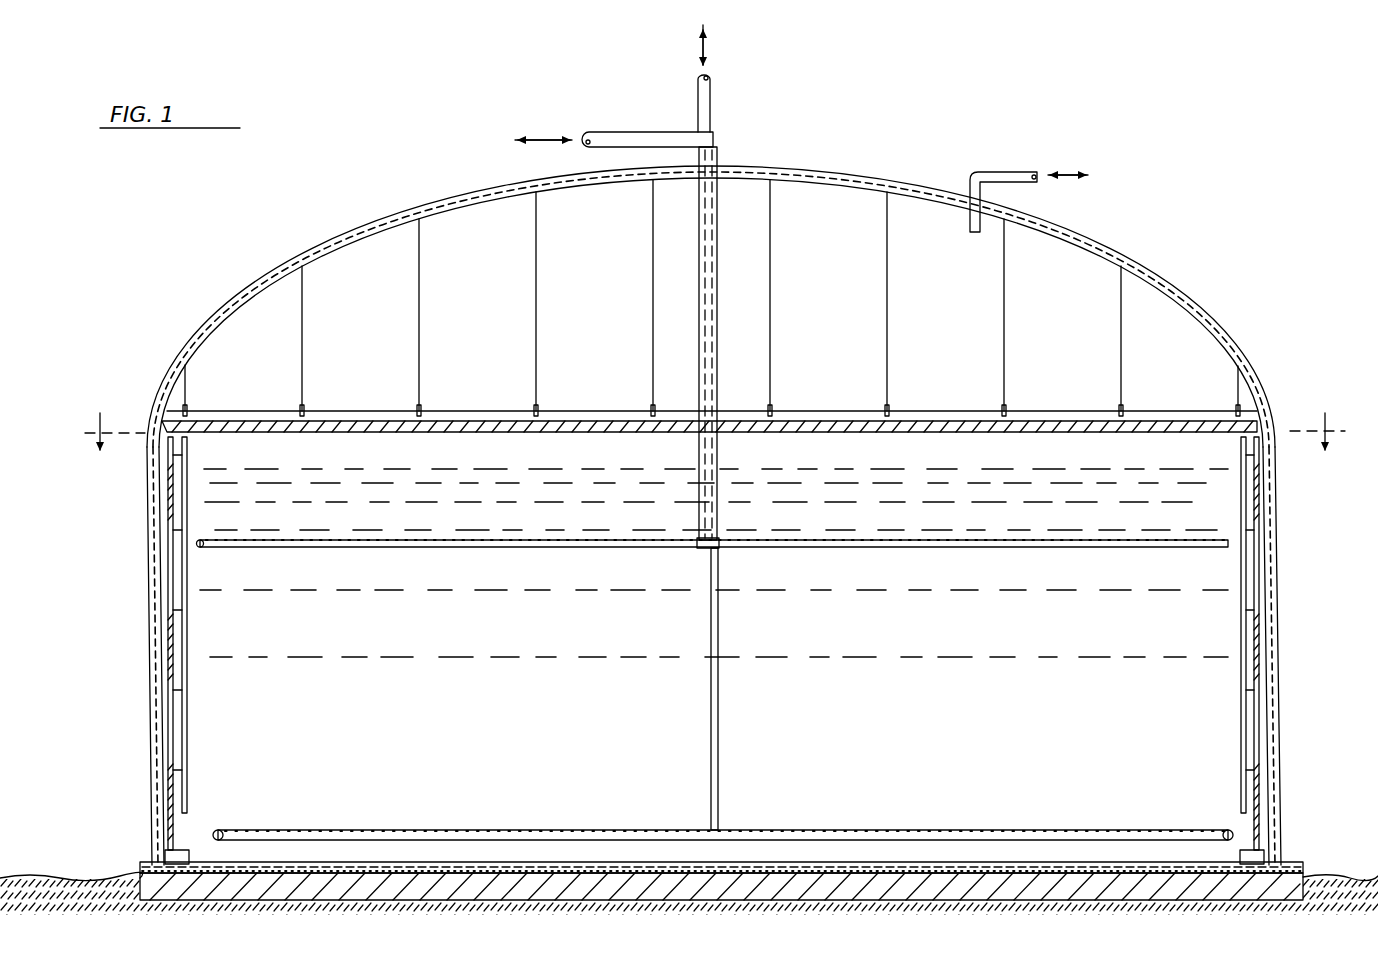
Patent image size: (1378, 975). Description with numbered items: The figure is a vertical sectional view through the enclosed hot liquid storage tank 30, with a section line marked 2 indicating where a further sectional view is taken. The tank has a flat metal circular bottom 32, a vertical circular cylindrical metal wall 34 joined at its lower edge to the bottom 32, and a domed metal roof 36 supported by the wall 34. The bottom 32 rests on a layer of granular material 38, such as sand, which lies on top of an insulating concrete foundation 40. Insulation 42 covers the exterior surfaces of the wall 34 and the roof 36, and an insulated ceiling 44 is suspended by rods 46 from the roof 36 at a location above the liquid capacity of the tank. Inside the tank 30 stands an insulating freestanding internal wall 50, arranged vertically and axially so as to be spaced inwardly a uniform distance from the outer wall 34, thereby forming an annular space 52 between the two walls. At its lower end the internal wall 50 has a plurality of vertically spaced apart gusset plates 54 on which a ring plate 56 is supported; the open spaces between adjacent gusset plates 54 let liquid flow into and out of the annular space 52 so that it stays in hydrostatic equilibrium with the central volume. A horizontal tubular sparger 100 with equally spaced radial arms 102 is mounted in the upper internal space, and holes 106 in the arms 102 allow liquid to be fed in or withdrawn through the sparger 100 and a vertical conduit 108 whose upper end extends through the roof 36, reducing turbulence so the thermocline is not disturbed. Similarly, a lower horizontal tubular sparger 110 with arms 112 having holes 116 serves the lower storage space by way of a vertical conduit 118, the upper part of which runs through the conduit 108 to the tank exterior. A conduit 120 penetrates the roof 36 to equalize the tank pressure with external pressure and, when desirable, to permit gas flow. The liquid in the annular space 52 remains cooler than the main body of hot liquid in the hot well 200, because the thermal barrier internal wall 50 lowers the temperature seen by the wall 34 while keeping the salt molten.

The hot liquid storage tank 30 is at (188, 298).
The bottom 32 is at (808, 866).
The wall 34 is at (1270, 470).
The roof 36 is at (334, 250).
The layer of granular material 38 is at (297, 878).
The insulating concrete foundation 40 is at (494, 885).
The insulation 42 is at (1138, 258).
The insulated ceiling 44 is at (460, 416).
The rods 46 is at (422, 320).
The internal wall 50 is at (706, 643).
The annular space 52 is at (1270, 570).
The gusset plates 54 is at (1268, 852).
The ring plate 56 is at (170, 858).
The sparger 100 is at (713, 545).
The radial arms 102 is at (713, 545).
The holes 106 is at (511, 540).
The conduit 108 is at (718, 290).
The sparger 110 is at (723, 800).
The arms 112 is at (723, 810).
The holes 116 is at (500, 830).
The conduit 118 is at (710, 100).
The conduit 120 is at (1020, 138).
The hot well 200 is at (802, 626).
The section line 2- 2 is at (708, 422).